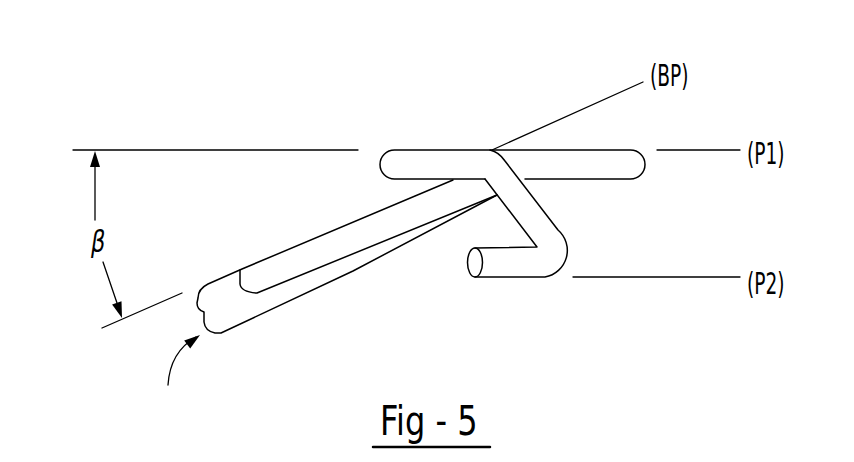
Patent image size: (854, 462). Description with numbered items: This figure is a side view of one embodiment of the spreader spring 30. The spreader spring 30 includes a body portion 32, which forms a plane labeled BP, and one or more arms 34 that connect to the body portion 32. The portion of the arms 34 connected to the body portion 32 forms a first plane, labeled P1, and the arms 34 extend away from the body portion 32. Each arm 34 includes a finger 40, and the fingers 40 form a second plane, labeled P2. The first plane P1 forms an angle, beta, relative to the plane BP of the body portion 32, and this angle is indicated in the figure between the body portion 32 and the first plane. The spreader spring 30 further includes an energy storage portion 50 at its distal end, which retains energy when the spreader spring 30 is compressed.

The spreader spring 30 is at (391, 110).
The body portion 32 is at (288, 262).
The arm 34 is at (605, 180).
The finger 40 is at (508, 277).
The energy storage portion 50 is at (177, 377).